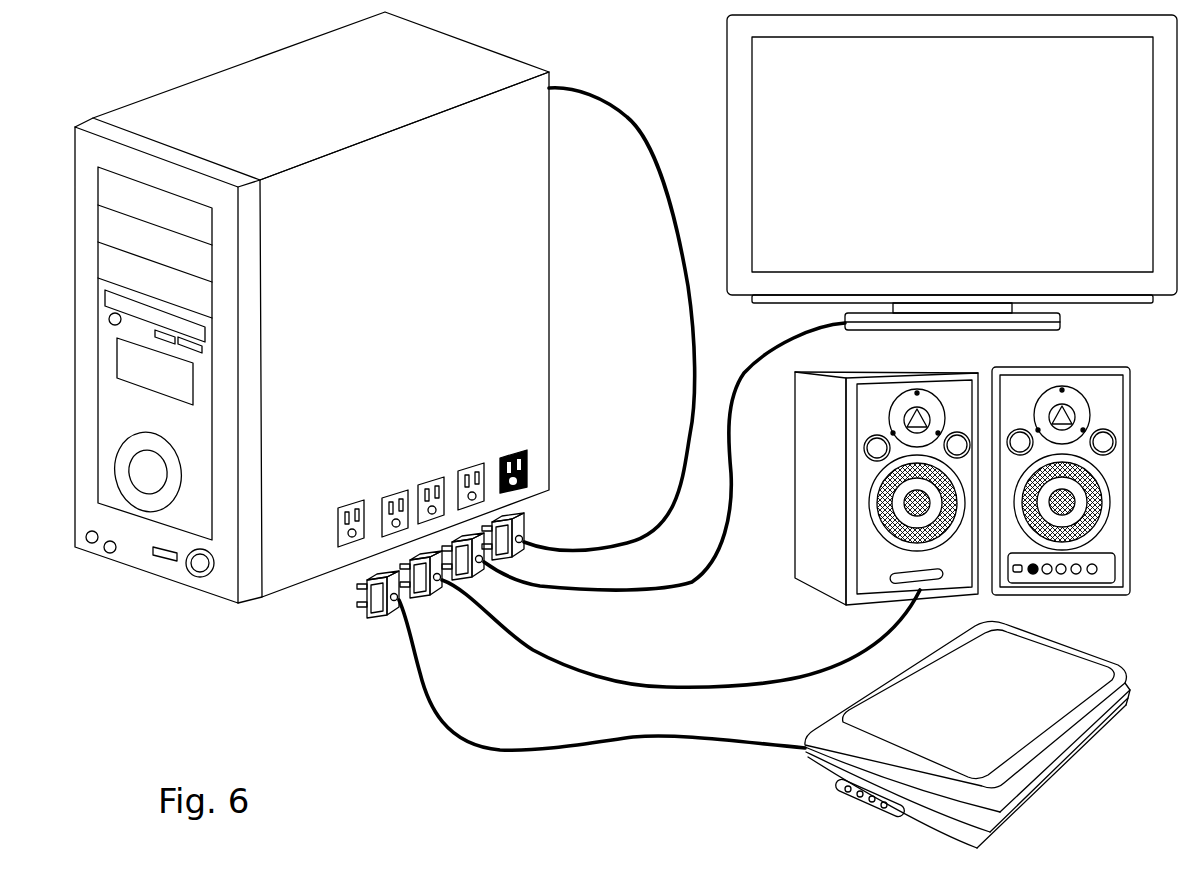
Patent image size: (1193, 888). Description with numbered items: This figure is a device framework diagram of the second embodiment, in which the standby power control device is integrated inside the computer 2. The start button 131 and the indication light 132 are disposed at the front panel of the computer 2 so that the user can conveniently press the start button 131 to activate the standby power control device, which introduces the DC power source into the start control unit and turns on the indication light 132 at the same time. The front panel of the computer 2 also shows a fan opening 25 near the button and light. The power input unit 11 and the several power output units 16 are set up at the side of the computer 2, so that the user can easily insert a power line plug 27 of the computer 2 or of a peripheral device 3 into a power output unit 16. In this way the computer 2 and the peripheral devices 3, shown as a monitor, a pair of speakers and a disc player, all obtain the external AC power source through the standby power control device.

The computer 2 is at (280, 95).
The peripheral device 3 is at (735, 107).
The power input unit 11 is at (529, 455).
The power output units 16 is at (340, 527).
The fan opening 25 is at (148, 472).
The power line plug 27 is at (373, 618).
The start button 131 is at (207, 577).
The indication light 132 is at (160, 557).